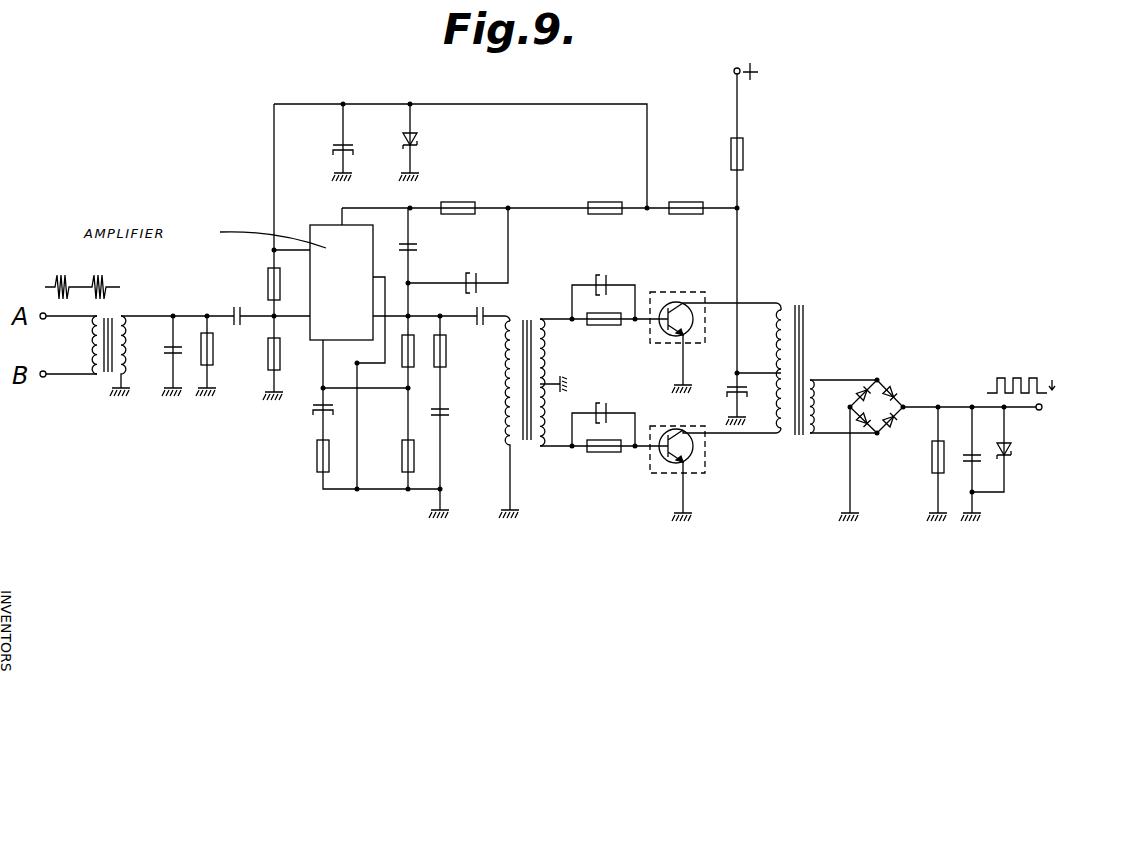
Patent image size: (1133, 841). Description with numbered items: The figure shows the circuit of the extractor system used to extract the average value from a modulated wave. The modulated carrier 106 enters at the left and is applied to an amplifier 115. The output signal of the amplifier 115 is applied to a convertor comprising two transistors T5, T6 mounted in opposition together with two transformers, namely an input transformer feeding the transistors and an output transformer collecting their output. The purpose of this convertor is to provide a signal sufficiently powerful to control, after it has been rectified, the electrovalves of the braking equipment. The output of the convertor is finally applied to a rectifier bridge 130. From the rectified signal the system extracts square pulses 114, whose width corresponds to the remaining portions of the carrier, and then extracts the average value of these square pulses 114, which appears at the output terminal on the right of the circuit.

The modulated carrier 106 is at (106, 278).
The amplifier 115 is at (317, 226).
The rectifier bridge 130 is at (881, 392).
The square pulses 114 is at (1045, 381).
The transistor T5 is at (678, 304).
The transistor T6 is at (692, 455).